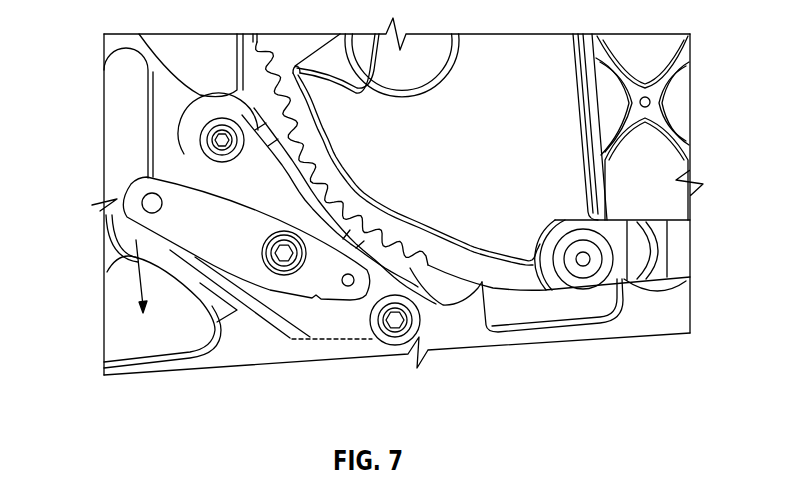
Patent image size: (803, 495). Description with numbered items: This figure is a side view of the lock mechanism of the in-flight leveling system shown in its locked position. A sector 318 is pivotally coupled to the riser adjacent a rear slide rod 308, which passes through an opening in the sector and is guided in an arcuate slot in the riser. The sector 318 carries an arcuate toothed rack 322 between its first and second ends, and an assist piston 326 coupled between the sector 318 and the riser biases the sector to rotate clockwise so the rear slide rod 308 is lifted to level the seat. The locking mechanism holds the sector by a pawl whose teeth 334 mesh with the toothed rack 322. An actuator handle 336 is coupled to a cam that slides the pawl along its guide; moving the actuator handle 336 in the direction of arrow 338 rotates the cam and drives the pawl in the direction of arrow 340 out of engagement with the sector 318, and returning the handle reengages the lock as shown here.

The rear slide rod 308 is at (370, 91).
The sector 318 is at (540, 60).
The arcuate toothed rack 322 is at (384, 192).
The teeth 334 is at (330, 163).
The assist piston 326 is at (677, 239).
The actuator handle 336 is at (117, 223).
The arrow 338 is at (116, 298).
The arrow 340 is at (231, 323).